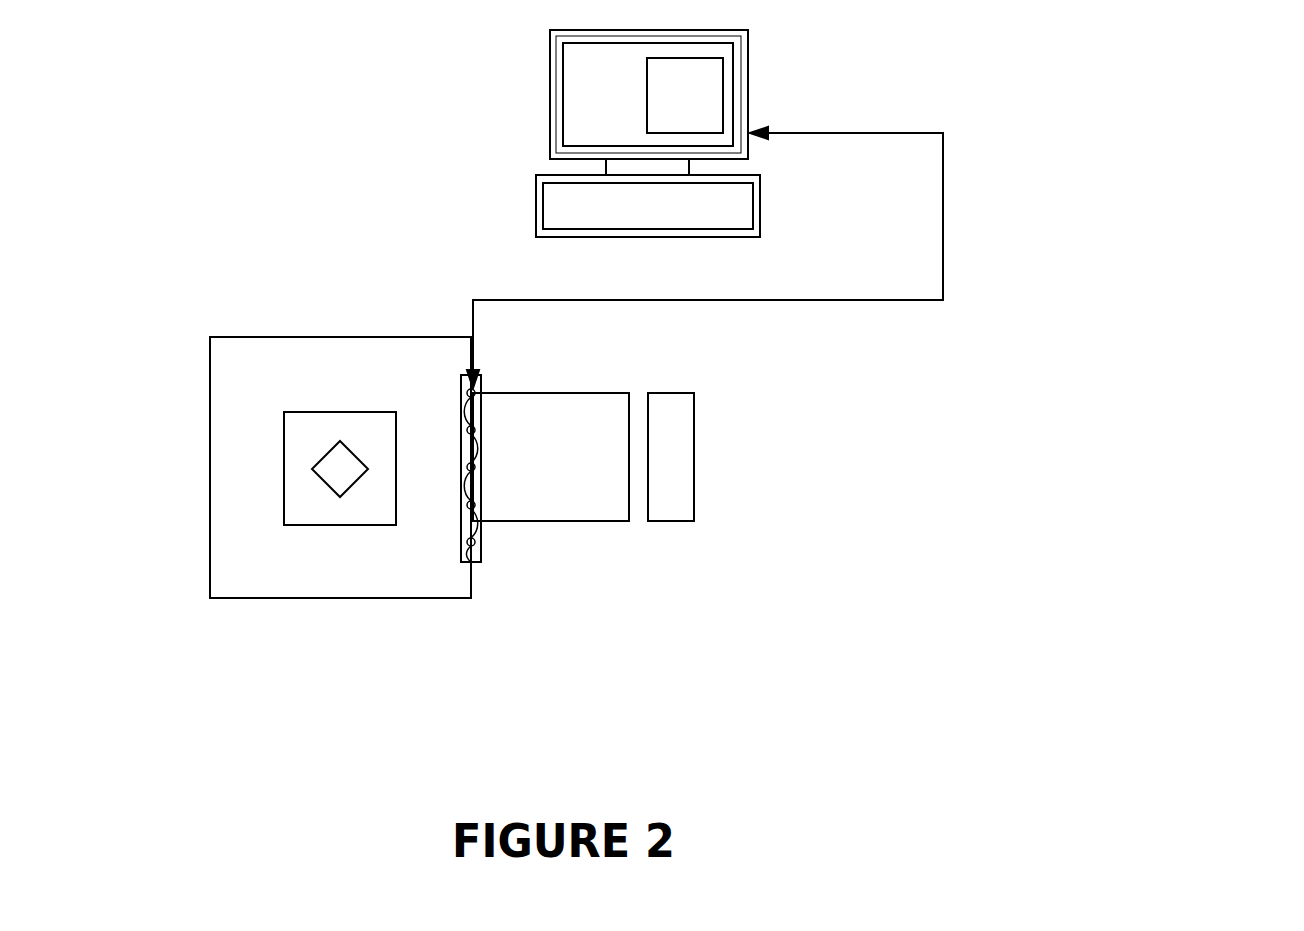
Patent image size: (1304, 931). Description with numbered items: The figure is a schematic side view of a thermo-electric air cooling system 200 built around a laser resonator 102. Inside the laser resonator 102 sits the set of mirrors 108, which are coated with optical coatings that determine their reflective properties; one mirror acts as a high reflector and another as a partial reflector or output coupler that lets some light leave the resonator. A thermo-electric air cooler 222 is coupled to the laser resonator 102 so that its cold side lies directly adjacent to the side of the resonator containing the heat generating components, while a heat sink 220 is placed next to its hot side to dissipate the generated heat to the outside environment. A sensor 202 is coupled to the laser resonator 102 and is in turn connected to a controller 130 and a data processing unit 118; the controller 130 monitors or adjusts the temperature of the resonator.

The data processing unit 118 is at (573, 96).
The controller 130 is at (710, 70).
The laser resonator 102 is at (210, 469).
The set of mirrors 108 is at (340, 441).
The sensor 202 is at (472, 552).
The thermo-electric air cooler 222 is at (573, 521).
The heat sink 220 is at (694, 483).
The thermo-electric air cooling system 200 is at (947, 677).